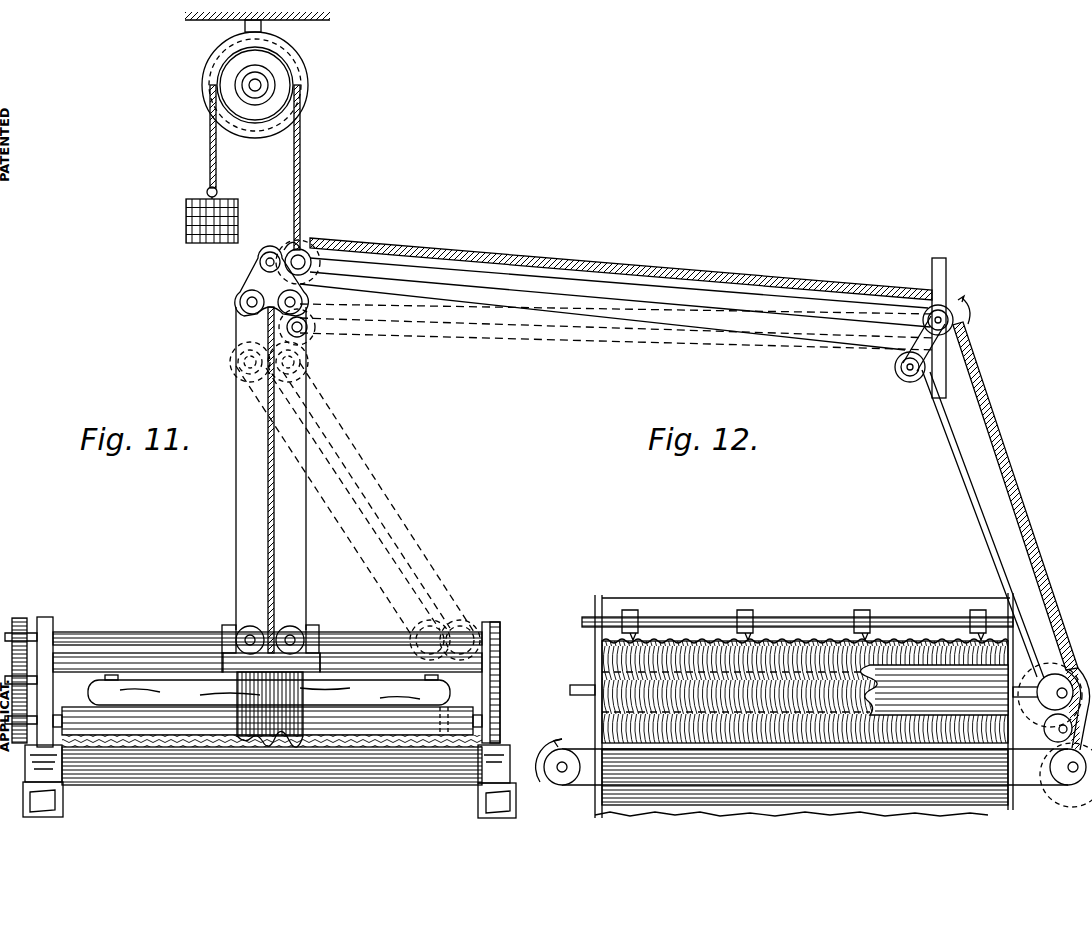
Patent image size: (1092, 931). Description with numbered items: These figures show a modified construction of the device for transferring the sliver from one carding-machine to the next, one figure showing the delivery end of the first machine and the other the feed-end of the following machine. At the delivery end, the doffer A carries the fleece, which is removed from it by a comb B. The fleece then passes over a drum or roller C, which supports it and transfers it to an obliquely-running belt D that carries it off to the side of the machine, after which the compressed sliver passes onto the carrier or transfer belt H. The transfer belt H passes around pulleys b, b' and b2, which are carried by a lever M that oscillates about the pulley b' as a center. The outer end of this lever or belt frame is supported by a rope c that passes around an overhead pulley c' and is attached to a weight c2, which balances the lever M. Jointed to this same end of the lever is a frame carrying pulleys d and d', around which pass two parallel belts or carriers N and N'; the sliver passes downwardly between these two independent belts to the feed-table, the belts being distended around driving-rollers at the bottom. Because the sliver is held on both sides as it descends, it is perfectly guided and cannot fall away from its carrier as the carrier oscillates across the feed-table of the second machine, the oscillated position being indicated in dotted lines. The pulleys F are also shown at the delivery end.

In FIG. 11, the pulley c' is at (271, 85).
In FIG. 11, the rope c is at (265, 167).
In FIG. 11, the weight c2 is at (190, 203).
In FIG. 11, the pulley b2 is at (312, 240).
In FIG. 11, the pulley d is at (235, 302).
In FIG. 11, the pulley d' is at (308, 317).
In FIG. 11, the belt or carrier N is at (265, 527).
In FIG. 11, the belt or carrier N' is at (358, 511).
In FIG. 12, the lever M is at (617, 294).
In FIG. 12, the pulley b' is at (948, 332).
In FIG. 12, the pulley b is at (900, 374).
In FIG. 12, the carrier or transfer belt H is at (984, 505).
In FIG. 12, the comb B is at (808, 612).
In FIG. 12, the drum or roller C is at (805, 690).
In FIG. 12, the pulleys F is at (1055, 735).
In FIG. 12, the obliquely-running belt D is at (775, 748).
In FIG. 12, the doffer A is at (791, 823).